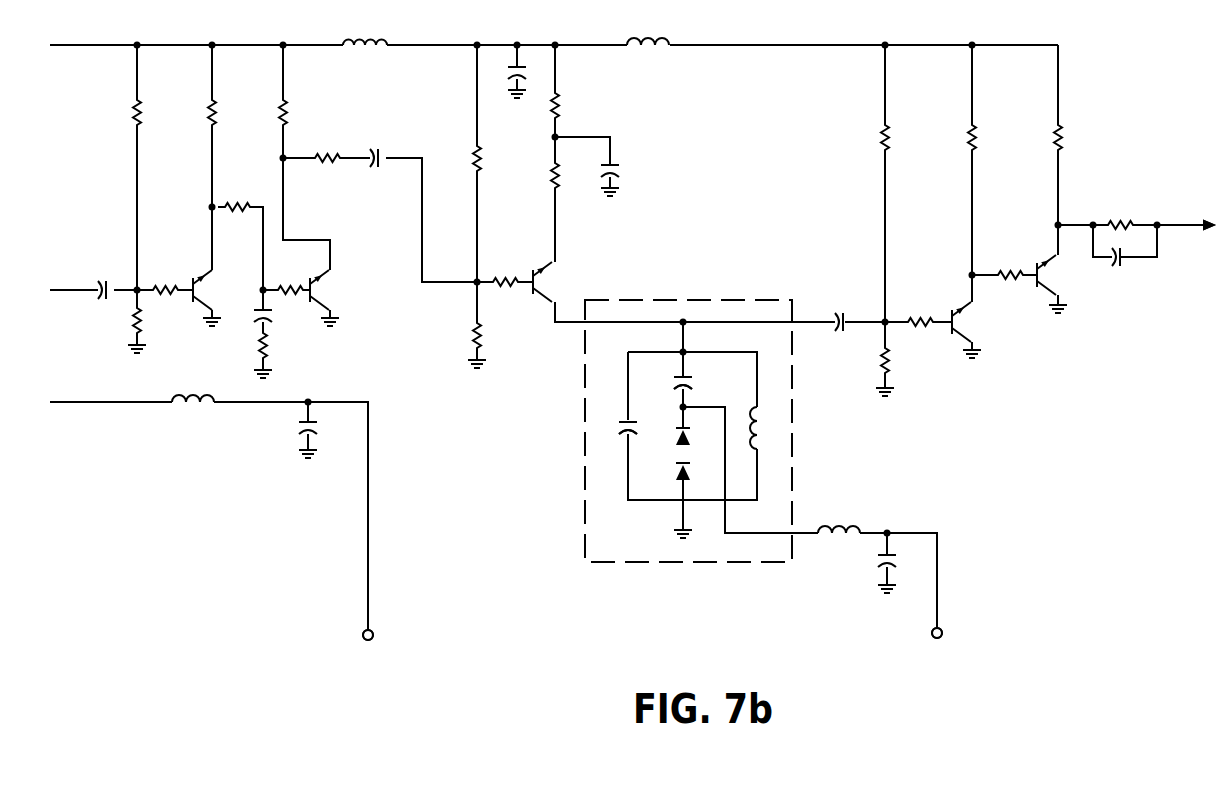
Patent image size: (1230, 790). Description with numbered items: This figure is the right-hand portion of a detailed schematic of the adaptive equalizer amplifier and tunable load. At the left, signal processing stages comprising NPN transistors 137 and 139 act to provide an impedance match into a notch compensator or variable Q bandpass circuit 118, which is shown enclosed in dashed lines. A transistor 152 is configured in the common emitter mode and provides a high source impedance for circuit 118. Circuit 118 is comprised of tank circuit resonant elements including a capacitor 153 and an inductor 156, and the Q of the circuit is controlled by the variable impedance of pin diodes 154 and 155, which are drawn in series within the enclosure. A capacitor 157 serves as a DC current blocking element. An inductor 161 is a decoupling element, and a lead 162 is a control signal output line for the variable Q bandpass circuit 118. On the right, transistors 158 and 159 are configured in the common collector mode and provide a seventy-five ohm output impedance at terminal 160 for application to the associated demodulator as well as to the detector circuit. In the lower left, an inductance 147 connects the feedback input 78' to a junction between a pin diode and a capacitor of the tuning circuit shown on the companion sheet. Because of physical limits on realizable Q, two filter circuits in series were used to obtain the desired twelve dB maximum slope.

The NPN transistor 137 is at (226, 280).
The NPN transistor 139 is at (350, 279).
The transistor 152 is at (578, 276).
The transistor 158 is at (994, 328).
The transistor 159 is at (1082, 283).
The variable Q bandpass circuit 118 is at (661, 566).
The capacitor 153 is at (623, 420).
The capacitor 157 is at (695, 386).
The pin diode 155 is at (678, 436).
The pin diode 154 is at (678, 471).
The inductor 156 is at (766, 428).
The inductor 161 is at (838, 528).
The lead 162 is at (940, 590).
The terminal 160 is at (1178, 222).
The inductance 147 is at (194, 404).
The feedback input 78' is at (339, 605).